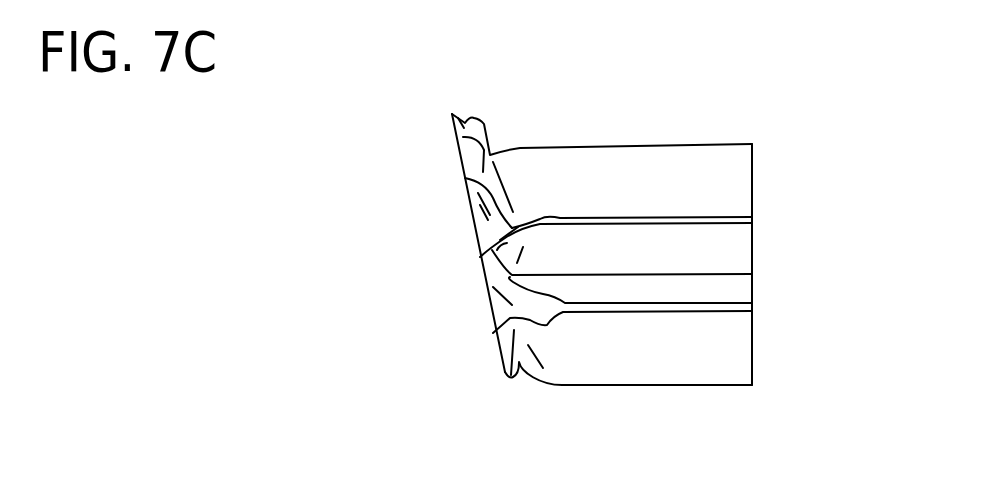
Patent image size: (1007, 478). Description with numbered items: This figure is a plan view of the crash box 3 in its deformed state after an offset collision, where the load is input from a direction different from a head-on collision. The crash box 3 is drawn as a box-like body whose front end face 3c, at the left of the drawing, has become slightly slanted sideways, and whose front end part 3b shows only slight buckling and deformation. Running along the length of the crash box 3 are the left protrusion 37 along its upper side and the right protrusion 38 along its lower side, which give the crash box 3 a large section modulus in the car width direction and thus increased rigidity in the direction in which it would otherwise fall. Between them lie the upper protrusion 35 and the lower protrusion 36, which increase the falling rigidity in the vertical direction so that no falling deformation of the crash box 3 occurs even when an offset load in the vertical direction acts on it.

The crash box 3 is at (687, 145).
The front end part 3b is at (511, 378).
The front end face 3c is at (477, 244).
The upper protrusion 35 is at (728, 233).
The lower protrusion 36 is at (665, 258).
The left protrusion 37 is at (593, 165).
The right protrusion 38 is at (672, 368).